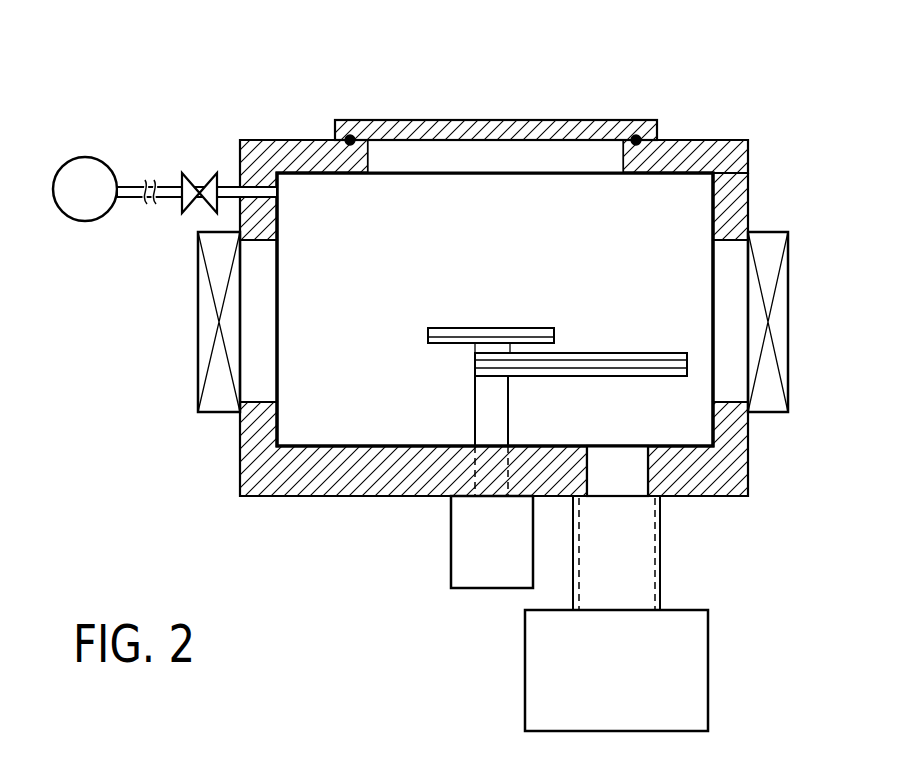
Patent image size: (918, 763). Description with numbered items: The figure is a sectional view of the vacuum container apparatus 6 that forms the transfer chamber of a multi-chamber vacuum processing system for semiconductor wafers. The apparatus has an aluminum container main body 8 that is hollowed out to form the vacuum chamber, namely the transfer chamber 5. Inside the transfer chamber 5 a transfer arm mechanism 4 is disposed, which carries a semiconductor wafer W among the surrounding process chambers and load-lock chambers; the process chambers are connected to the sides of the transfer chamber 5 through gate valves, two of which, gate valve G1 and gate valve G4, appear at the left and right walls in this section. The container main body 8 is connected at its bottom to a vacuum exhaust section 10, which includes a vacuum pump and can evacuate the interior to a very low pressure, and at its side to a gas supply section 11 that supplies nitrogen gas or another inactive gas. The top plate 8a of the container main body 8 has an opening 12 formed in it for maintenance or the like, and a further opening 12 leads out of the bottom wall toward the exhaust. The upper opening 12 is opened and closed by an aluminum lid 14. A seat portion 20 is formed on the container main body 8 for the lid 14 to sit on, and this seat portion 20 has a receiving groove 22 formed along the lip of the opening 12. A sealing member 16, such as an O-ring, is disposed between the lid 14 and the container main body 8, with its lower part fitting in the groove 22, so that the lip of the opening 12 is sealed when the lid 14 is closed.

The transfer arm mechanism 4 is at (595, 342).
The transfer chamber 5 is at (362, 250).
The vacuum container apparatus 6 is at (538, 94).
The container main body 8 is at (332, 497).
The top plate 8a is at (307, 139).
The vacuum exhaust section 10 is at (527, 662).
The gas supply section 11 is at (85, 157).
The opening 12 is at (497, 152).
The lid 14 is at (572, 120).
The sealing member 16 is at (637, 134).
The seat portion 20 is at (350, 134).
The receiving groove 22 is at (636, 148).
The semiconductor wafer W is at (456, 328).
The gate valve G1 is at (770, 415).
The gate valve G4 is at (213, 415).